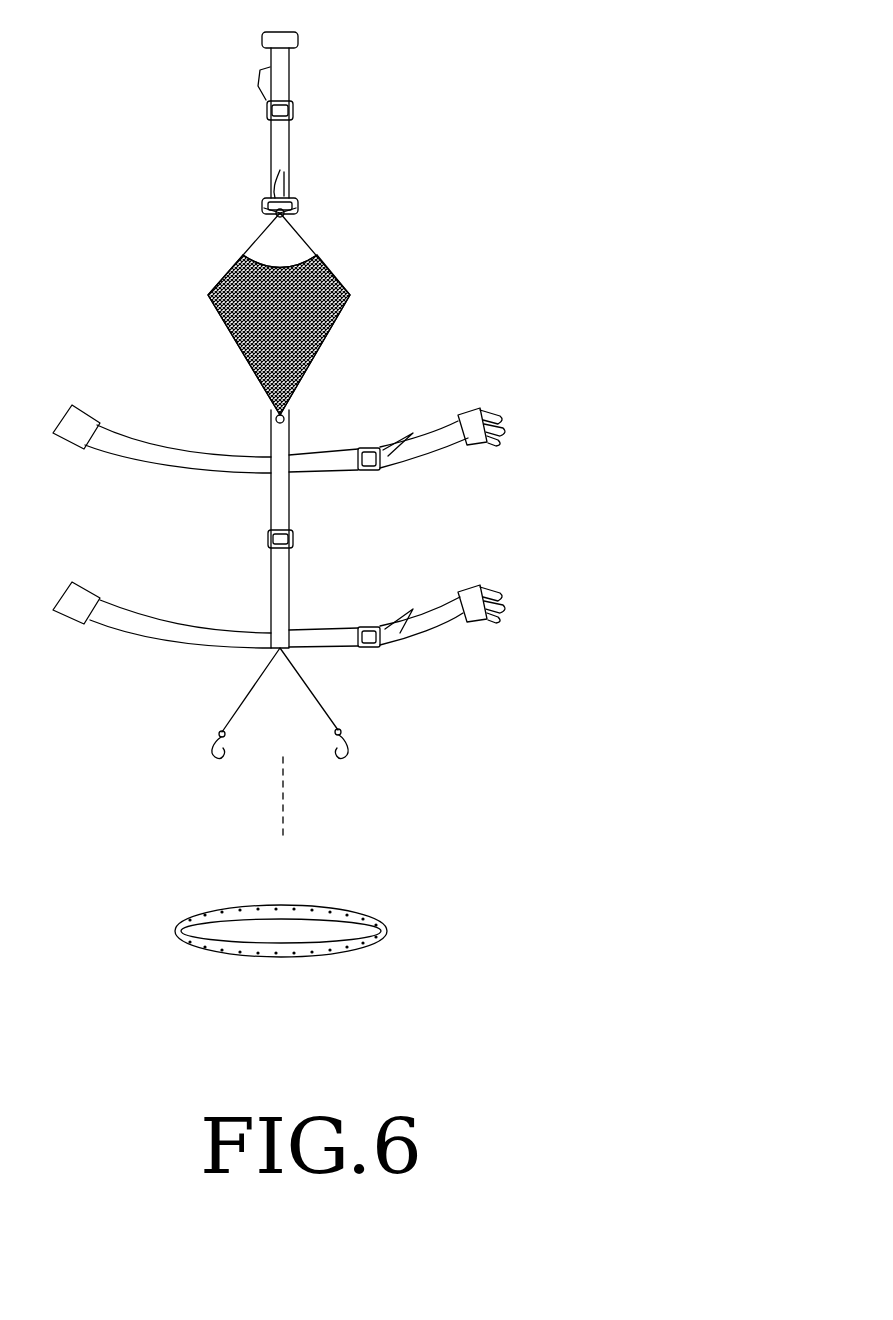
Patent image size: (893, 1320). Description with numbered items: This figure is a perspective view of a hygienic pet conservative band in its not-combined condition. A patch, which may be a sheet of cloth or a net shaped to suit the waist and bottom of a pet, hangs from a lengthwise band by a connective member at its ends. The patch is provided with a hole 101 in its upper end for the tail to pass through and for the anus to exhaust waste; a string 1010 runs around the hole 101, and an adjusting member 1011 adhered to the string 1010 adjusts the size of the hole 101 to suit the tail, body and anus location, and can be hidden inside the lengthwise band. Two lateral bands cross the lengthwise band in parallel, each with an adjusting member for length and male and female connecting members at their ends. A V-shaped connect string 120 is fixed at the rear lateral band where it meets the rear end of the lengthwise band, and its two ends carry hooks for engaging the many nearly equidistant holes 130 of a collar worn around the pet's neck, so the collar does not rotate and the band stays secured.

The adjusting member 1011 is at (290, 198).
The string 1010 is at (305, 235).
The hole 101 is at (270, 242).
The V-shaped connect string 120 is at (240, 702).
The holes 130 is at (373, 942).